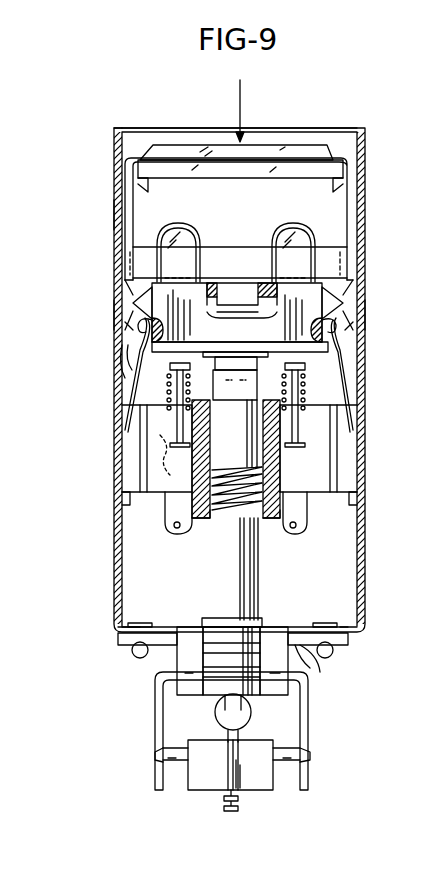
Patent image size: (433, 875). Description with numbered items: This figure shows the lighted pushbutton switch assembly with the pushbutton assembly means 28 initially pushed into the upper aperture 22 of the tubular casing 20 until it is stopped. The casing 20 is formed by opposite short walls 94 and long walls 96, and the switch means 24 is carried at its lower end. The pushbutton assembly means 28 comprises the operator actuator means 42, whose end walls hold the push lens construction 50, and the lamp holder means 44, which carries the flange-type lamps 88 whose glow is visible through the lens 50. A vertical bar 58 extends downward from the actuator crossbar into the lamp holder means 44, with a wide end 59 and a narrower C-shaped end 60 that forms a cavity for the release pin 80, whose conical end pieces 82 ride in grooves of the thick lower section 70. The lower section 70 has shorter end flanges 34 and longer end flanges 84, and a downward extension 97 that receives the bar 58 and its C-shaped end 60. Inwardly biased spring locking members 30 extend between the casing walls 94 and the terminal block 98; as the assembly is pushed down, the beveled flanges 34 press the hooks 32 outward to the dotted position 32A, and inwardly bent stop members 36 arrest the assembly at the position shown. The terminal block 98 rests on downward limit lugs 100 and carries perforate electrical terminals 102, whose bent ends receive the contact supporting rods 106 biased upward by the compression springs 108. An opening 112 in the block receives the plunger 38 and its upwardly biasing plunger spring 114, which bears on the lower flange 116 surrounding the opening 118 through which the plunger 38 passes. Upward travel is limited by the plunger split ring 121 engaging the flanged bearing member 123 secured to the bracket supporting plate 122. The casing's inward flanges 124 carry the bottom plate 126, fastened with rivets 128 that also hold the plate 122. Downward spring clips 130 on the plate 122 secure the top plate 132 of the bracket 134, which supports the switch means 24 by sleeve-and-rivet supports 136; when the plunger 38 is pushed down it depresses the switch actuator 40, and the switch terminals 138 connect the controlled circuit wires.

The casing 20 is at (70, 218).
The casing aperture 22 is at (148, 104).
The switch means 24 is at (205, 778).
The pushbutton assembly means 28 is at (330, 139).
The spring locking member 30 is at (135, 365).
The hook 32 is at (132, 300).
The outwardly pressed hook position 32A is at (114, 307).
The shorter end flange 34 is at (150, 345).
The stop member 36 is at (165, 385).
The plunger 38 is at (247, 585).
The switch actuator 40 is at (248, 712).
The operator actuator means 42 is at (288, 145).
The lamp holder means 44 is at (346, 265).
The push lens construction 50 is at (187, 160).
The vertical bar 58 is at (252, 268).
The wide end of bar 59 is at (240, 430).
The C-shaped end 60 is at (213, 380).
The lower section 70 is at (200, 285).
The release pin 80 is at (232, 290).
The conical end piece 82 is at (140, 300).
The longer end flange 84 is at (140, 330).
The lamp 88 is at (190, 235).
The short wall 94 is at (114, 152).
The long wall 96 is at (135, 135).
The downward extension 97 is at (242, 352).
The terminal block 98 is at (132, 470).
The downward limit lug 100 is at (122, 500).
The electrical terminal 102 is at (168, 530).
The contact supporting rod 106 is at (142, 450).
The compression spring 108 is at (170, 435).
The opening 112 is at (272, 470).
The plunger spring 114 is at (222, 510).
The lower flange 116 is at (262, 530).
The opening 118 is at (200, 510).
The plunger split ring 121 is at (222, 700).
The bracket supporting plate 122 is at (290, 630).
The flanged bearing member 123 is at (213, 618).
The inward flange 124 is at (130, 627).
The bottom plate 126 is at (315, 665).
The rivet 128 is at (135, 622).
The spring clip 130 is at (178, 660).
The top plate of bracket 132 is at (170, 690).
The bracket 134 is at (155, 735).
The support 136 is at (170, 752).
The terminal 138 is at (240, 808).